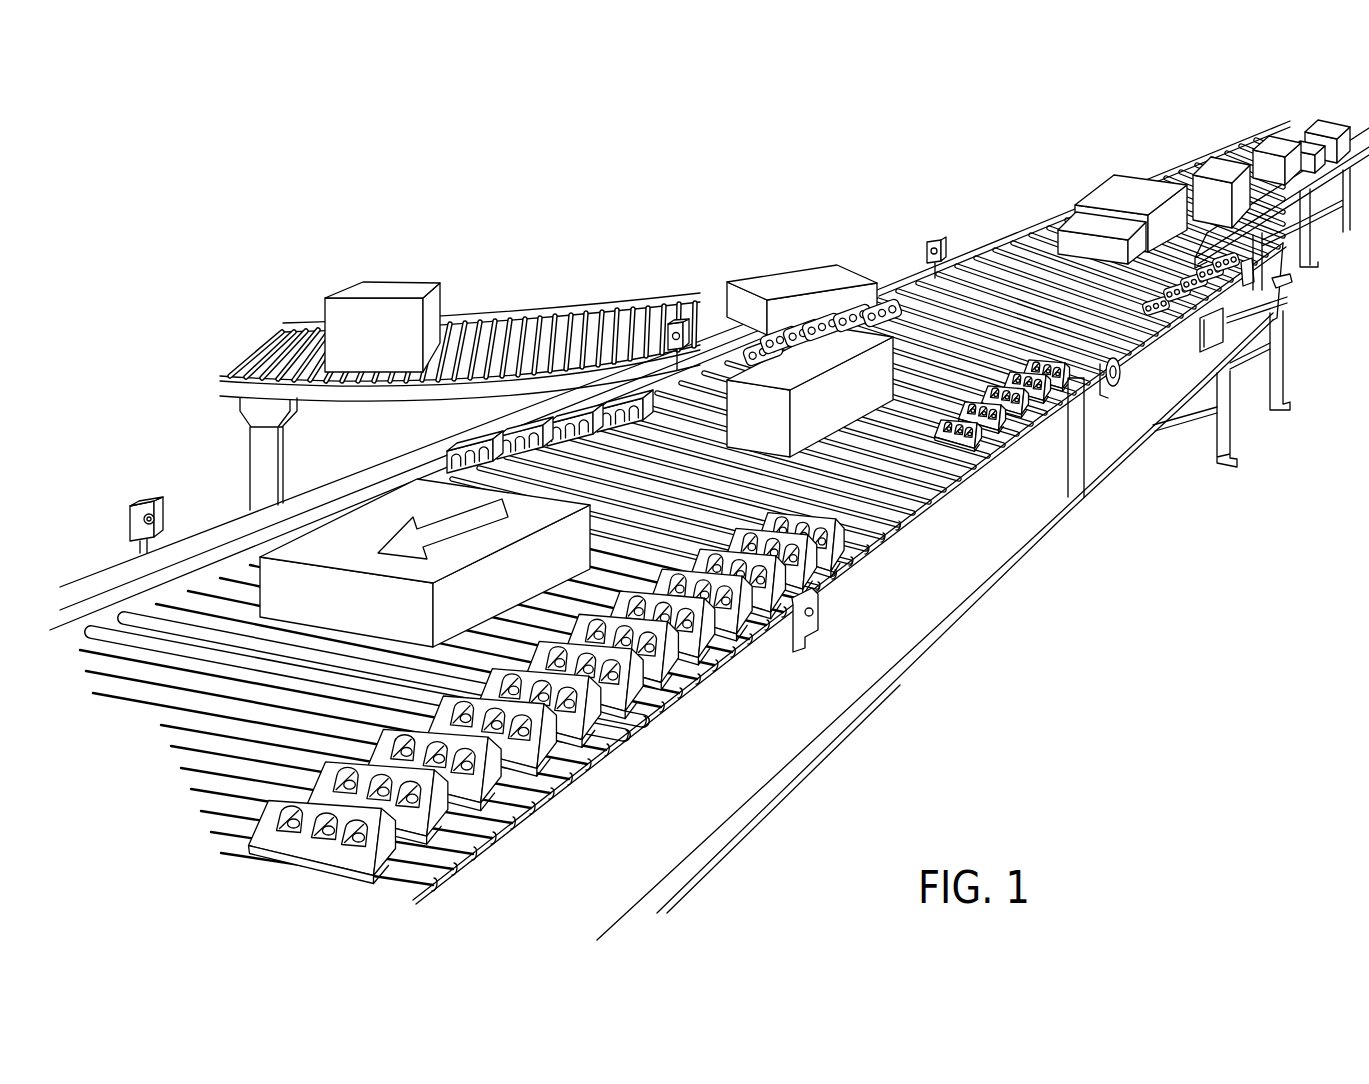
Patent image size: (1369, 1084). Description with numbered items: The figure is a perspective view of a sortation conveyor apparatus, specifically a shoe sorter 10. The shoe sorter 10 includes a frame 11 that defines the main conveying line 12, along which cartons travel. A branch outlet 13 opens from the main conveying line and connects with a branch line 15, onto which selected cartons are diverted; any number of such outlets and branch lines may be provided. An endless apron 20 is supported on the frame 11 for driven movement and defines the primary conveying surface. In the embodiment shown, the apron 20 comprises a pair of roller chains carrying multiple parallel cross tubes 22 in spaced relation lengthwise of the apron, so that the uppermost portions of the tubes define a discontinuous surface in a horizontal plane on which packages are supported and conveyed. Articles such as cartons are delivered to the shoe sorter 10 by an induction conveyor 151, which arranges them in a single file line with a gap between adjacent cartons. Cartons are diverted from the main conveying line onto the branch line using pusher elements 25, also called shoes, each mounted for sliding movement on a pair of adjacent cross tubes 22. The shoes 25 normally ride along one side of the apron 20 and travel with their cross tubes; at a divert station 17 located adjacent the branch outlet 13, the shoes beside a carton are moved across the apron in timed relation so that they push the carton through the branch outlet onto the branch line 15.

The shoe sorter 10 is at (708, 489).
The frame 11 is at (1068, 525).
The main conveying line 12 is at (440, 448).
The branch outlet 13 is at (886, 272).
The branch line 15 is at (527, 307).
The divert station 17 is at (975, 238).
The endless apron 20 is at (665, 515).
The cross tubes 22 is at (942, 523).
The pusher element 25 is at (523, 747).
The induction conveyor 151 is at (1225, 147).